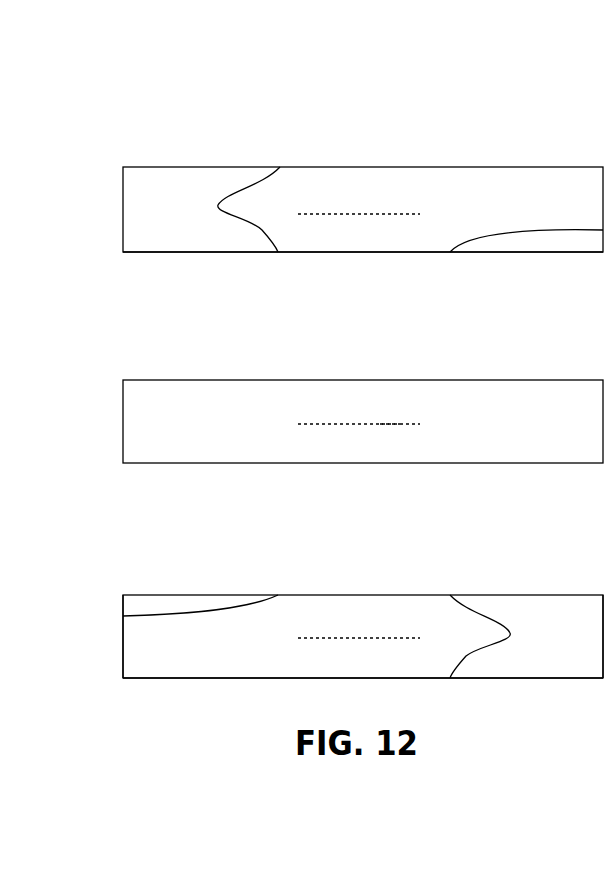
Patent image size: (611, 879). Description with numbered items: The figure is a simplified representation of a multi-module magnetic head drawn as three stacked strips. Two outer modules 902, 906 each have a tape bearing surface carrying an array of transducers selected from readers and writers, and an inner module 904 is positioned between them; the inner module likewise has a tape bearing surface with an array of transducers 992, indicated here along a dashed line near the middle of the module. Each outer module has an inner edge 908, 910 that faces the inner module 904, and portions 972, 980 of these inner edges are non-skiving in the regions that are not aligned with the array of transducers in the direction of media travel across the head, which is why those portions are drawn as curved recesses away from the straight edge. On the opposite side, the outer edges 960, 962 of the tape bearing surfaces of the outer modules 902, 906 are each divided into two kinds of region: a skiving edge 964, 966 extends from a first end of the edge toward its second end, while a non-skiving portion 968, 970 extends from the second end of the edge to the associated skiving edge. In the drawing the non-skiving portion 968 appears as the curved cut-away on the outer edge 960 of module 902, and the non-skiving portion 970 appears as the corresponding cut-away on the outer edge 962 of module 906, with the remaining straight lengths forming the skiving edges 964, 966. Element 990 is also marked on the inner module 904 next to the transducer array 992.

The outer module 902 is at (93, 190).
The inner module 904 is at (93, 418).
The outer module 906 is at (93, 624).
The inner edge 908 is at (313, 252).
The inner edge 910 is at (373, 595).
The outer edge 960 is at (385, 167).
The outer edge 962 is at (263, 680).
The skiving edge 964 is at (500, 150).
The skiving edge 966 is at (148, 690).
The non-skiving portion 968 is at (207, 146).
The non-skiving portion 970 is at (565, 690).
The non-skiving portion of inner edge 972 is at (562, 613).
The non-skiving portion of inner edge 980 is at (200, 603).
The score line 990 is at (313, 395).
The array of transducers 992 is at (390, 420).